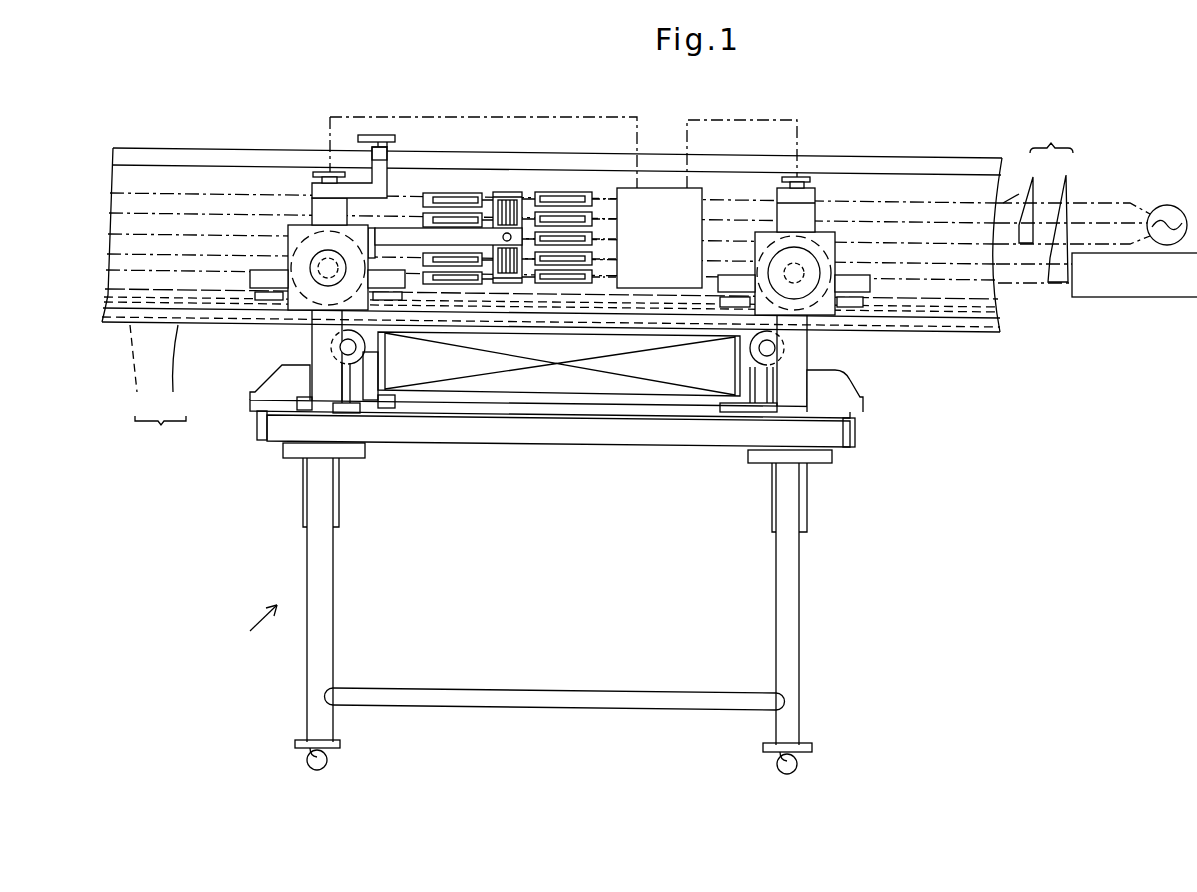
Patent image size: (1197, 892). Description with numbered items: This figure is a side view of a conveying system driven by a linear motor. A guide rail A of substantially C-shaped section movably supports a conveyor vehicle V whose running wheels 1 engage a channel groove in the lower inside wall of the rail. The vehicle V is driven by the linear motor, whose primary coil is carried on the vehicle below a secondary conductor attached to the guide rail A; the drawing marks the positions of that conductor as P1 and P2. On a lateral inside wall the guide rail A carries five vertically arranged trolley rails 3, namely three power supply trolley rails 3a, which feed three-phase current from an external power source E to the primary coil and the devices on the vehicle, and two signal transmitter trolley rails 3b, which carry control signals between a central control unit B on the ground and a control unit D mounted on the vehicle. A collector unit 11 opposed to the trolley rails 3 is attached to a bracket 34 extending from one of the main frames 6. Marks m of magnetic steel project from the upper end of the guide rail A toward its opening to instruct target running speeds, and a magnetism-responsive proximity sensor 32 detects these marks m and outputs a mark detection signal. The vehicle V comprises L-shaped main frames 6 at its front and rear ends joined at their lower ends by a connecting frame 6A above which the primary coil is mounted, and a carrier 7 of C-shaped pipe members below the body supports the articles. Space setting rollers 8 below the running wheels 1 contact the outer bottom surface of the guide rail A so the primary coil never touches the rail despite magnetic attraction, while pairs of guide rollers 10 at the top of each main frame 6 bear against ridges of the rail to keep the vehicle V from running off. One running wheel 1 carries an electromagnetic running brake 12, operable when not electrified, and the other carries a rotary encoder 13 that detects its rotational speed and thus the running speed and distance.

The running wheels 1 is at (305, 243).
The trolley rails 3 is at (1051, 136).
The power supply trolley rails 3a is at (1027, 198).
The signal transmitter trolley rails 3b is at (1063, 217).
The main frames 6 is at (321, 382).
The connecting frame 6A is at (604, 440).
The carrier 7 is at (314, 671).
The space setting rollers 8 is at (360, 350).
The guide rollers 10 is at (321, 171).
The collector unit 11 is at (560, 186).
The electromagnetic running brake 12 is at (805, 287).
The rotary encoder 13 is at (320, 286).
The magnetism-responsive proximity sensor 32 is at (381, 147).
The bracket 34 is at (400, 228).
The guide rail A is at (162, 149).
The central control unit B is at (1108, 297).
The control unit D is at (676, 195).
The external power source E is at (1165, 205).
The marks m is at (362, 136).
The conveyor vehicle V is at (252, 627).
The article position P1 is at (180, 371).
The article position P2 is at (138, 371).